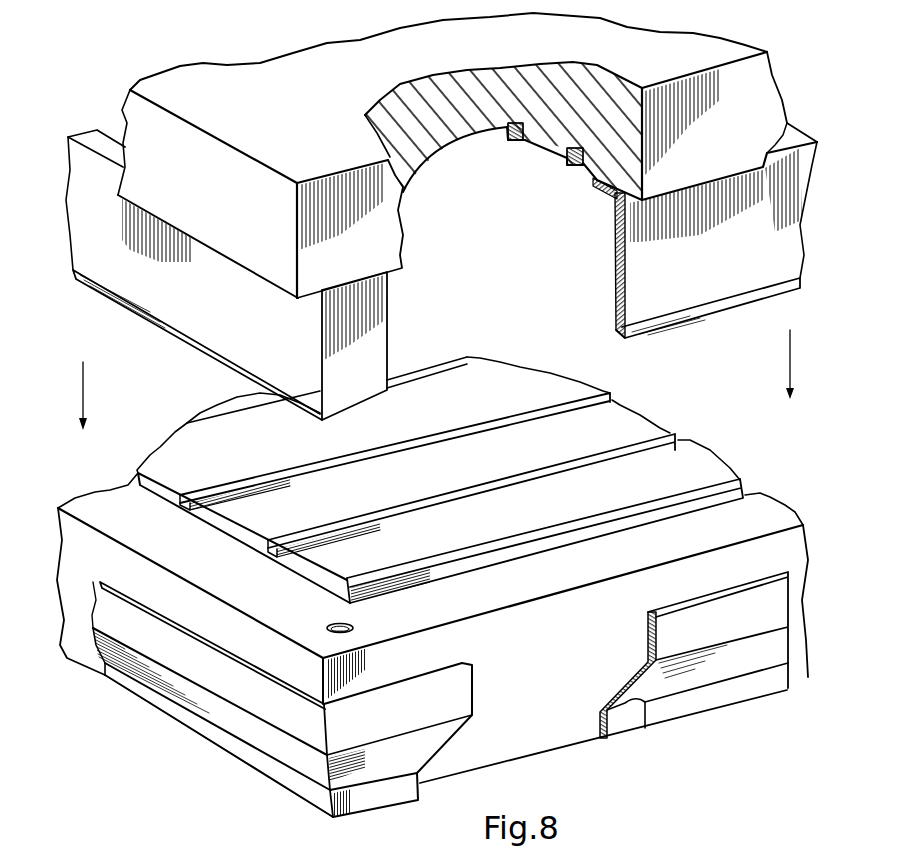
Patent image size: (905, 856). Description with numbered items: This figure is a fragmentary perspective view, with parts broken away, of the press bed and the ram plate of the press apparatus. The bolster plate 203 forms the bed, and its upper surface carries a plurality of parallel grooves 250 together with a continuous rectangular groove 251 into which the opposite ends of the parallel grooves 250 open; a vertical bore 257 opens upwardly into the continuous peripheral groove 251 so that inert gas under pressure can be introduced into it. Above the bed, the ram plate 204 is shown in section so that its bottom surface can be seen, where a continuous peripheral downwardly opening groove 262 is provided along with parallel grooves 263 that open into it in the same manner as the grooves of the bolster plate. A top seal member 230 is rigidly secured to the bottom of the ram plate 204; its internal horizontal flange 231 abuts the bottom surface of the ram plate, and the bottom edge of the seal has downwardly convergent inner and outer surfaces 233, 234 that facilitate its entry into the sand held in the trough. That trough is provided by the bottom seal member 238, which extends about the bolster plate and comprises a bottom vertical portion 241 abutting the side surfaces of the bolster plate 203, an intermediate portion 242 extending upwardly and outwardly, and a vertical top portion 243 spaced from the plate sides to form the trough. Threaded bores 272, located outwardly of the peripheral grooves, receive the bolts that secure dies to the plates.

The base block 203 is at (800, 540).
The ram plate 204 is at (772, 62).
The top seal member 230 is at (184, 336).
The internal horizontal flange 231 is at (602, 193).
The inner surface 233 is at (616, 334).
The outer surface 234 is at (636, 334).
The bottom seal member 238 is at (230, 764).
The bottom vertical portion 241 is at (622, 731).
The intermediate portion 242 is at (645, 723).
The vertical top portion 243 is at (93, 610).
The parallel grooves 250 is at (604, 392).
The continuous rectangular groove 251 is at (737, 500).
The vertical bore 257 is at (137, 478).
The continuous peripheral groove 262 is at (574, 169).
The parallel grooves 263 is at (521, 141).
The threaded bores 272 is at (353, 626).